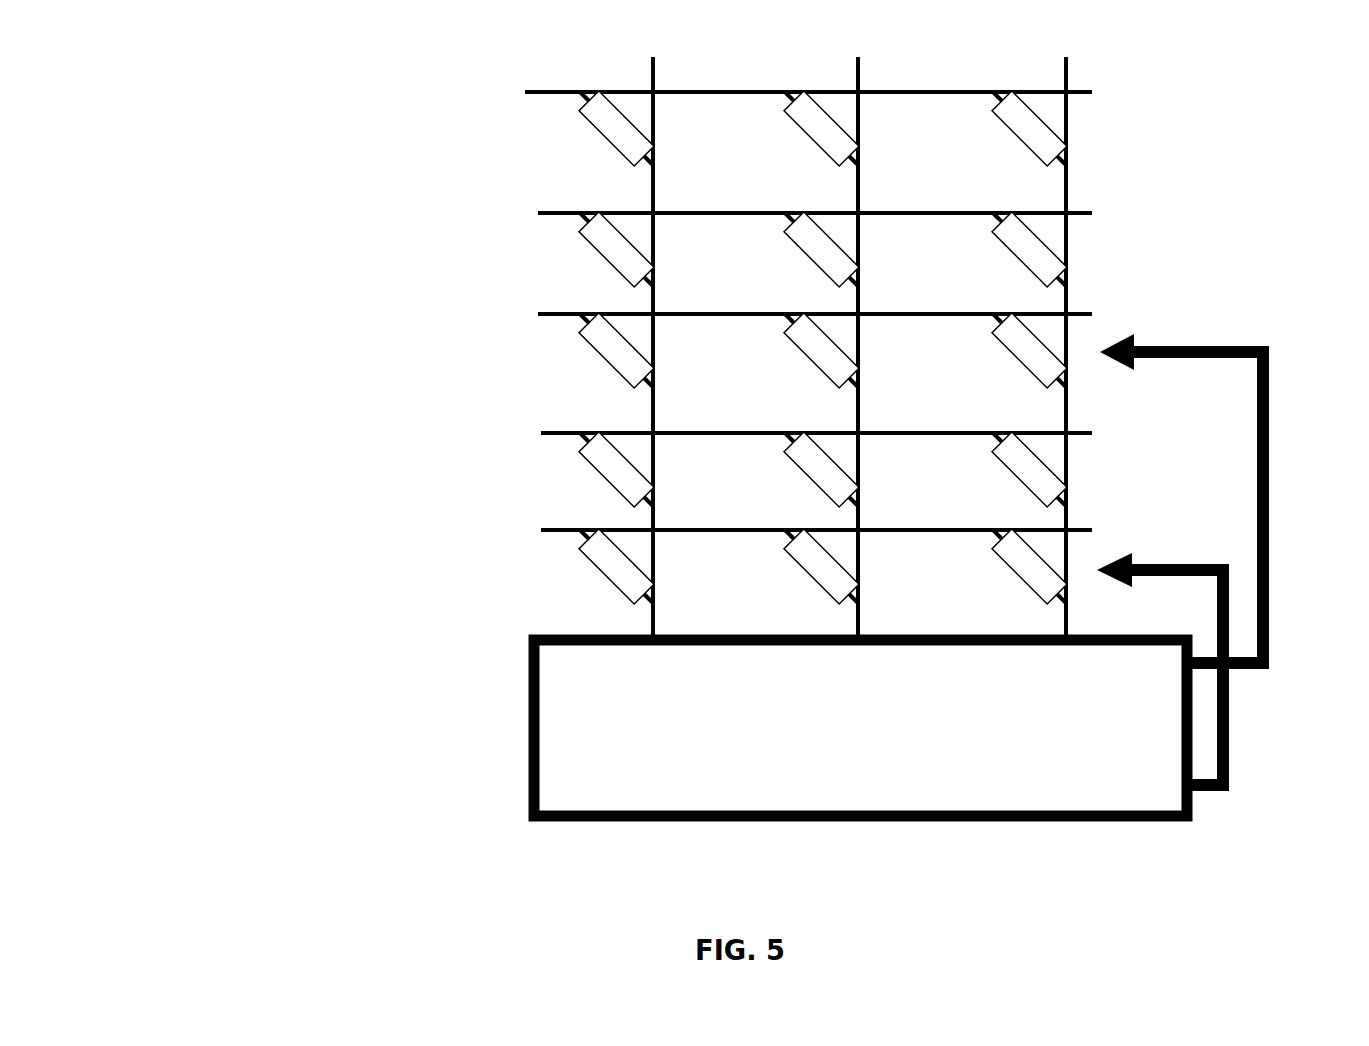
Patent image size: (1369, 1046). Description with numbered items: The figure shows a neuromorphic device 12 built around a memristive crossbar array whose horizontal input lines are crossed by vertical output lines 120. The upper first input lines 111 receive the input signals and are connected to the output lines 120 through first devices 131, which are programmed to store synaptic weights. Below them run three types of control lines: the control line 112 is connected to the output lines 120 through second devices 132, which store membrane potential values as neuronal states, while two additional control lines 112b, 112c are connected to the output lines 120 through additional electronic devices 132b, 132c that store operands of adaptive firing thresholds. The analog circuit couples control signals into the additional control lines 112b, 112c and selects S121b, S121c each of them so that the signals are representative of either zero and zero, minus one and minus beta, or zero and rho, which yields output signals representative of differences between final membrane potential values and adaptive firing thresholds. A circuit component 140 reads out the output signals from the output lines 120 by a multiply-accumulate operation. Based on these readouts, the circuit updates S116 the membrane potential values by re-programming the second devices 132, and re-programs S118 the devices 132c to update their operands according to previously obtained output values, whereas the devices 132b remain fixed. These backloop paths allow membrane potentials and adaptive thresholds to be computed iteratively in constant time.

The neuromorphic device 12 is at (320, 648).
The first input lines 111 is at (672, 92).
The control line 112 is at (895, 313).
The additional control line 112b is at (866, 433).
The additional control line 112c is at (672, 530).
The output lines 120 is at (1072, 107).
The first devices 131 is at (845, 108).
The second devices 132 is at (598, 372).
The additional electronic devices 132b is at (845, 467).
The additional electronic devices 132c is at (845, 558).
The updating step S116 is at (1195, 348).
The re-programming step S118 is at (1150, 566).
The selecting step S121b is at (300, 403).
The selecting step S121c is at (300, 507).
The circuit component 140 is at (533, 742).